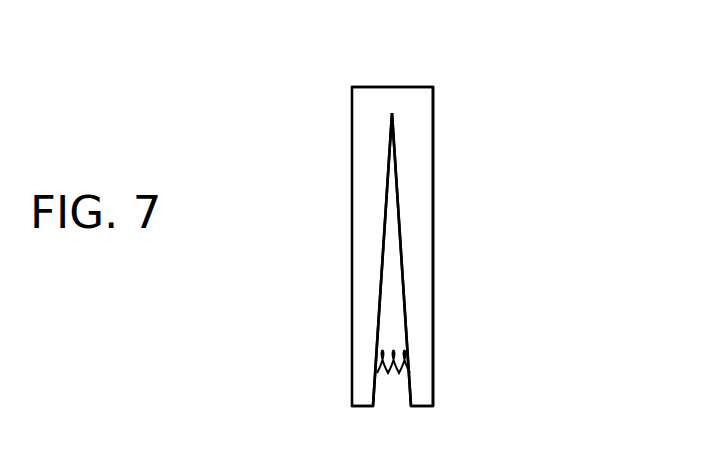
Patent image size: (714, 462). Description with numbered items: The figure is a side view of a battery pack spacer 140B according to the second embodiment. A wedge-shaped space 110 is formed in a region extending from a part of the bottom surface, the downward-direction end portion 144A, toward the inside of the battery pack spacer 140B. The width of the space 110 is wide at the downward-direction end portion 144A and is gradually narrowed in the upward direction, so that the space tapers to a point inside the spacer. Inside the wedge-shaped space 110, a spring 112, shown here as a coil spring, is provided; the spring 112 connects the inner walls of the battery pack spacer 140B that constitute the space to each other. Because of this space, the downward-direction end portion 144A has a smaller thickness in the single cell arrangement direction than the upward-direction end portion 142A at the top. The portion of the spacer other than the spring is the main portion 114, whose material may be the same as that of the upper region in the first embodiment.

The battery pack spacer 140B is at (590, 69).
The upward-direction end portion 142A is at (407, 87).
The main portion 114 is at (417, 163).
The wedge-shaped space 110 is at (390, 280).
The spring 112 is at (403, 356).
The downward-direction end portion 144A is at (363, 406).